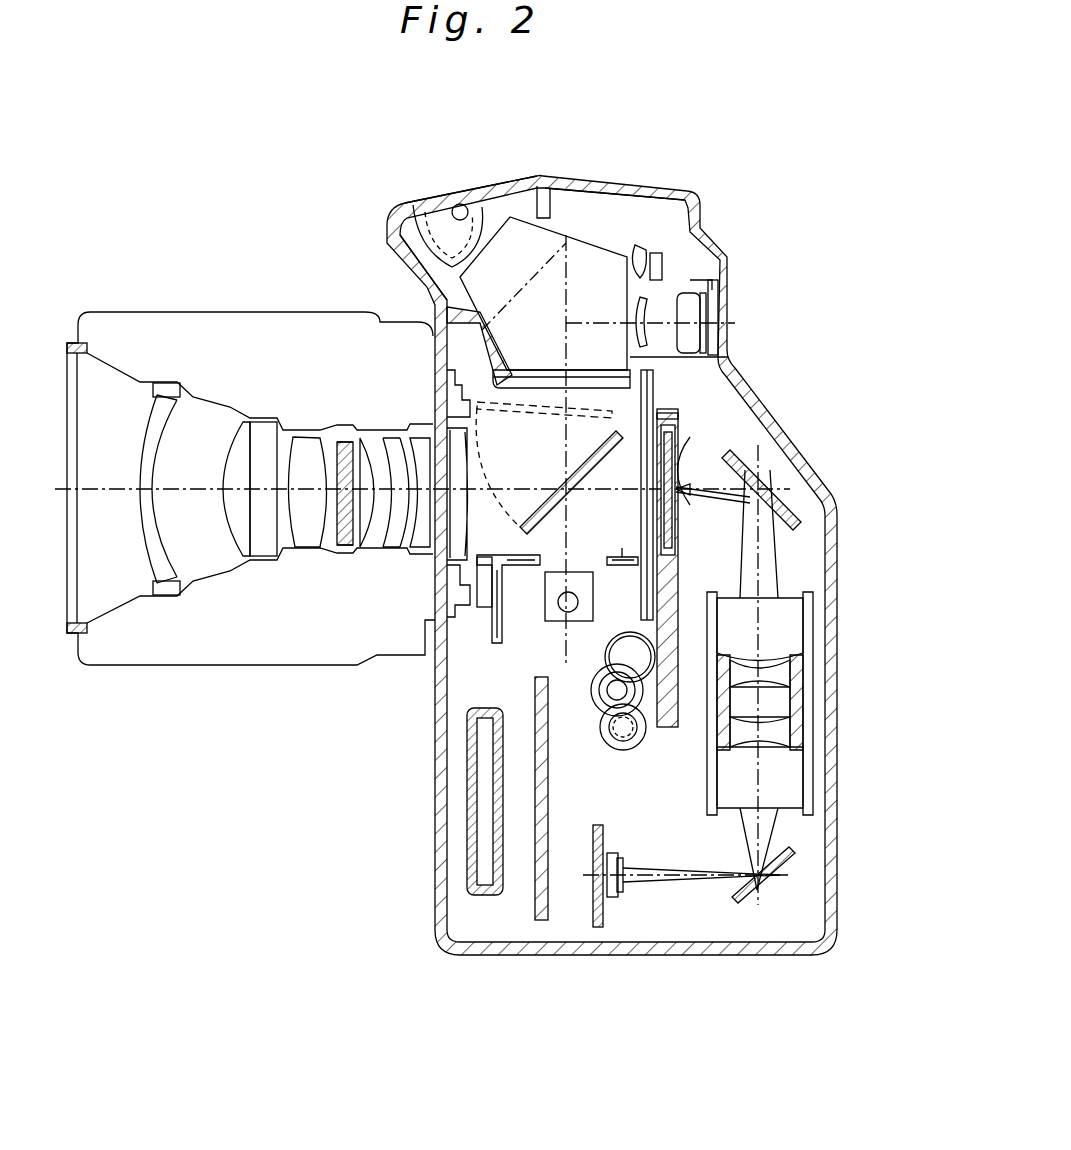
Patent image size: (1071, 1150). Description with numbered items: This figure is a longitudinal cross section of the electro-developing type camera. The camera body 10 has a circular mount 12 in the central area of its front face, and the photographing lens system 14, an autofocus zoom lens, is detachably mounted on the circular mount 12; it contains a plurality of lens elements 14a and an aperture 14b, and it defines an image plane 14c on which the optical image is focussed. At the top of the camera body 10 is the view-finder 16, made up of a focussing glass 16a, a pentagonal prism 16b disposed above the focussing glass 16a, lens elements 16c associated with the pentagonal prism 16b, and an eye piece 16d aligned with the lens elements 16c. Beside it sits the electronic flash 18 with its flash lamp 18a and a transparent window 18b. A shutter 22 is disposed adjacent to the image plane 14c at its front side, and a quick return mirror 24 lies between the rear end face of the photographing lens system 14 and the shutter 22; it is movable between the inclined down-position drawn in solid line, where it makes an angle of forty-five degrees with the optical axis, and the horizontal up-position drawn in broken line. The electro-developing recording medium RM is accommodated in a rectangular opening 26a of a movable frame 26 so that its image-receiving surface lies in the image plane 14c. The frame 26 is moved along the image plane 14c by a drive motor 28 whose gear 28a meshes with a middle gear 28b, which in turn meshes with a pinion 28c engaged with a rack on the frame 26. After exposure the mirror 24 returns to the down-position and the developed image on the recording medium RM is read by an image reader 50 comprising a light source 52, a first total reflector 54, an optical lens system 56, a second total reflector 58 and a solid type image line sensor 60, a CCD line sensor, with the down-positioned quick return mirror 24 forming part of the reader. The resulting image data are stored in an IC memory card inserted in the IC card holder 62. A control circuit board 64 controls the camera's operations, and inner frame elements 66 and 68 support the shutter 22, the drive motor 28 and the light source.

The camera body 10 is at (790, 960).
The circular mount 12 is at (428, 625).
The photographing lens system 14 is at (203, 312).
The lens elements 14a is at (428, 560).
The aperture 14b is at (350, 437).
The image plane 14c is at (673, 413).
The view-finder 16 is at (568, 232).
The focussing glass 16a is at (540, 378).
The pentagonal prism 16b is at (597, 265).
The lens elements 16c is at (663, 350).
The eye piece 16d is at (712, 302).
The electronic flash 18 is at (397, 208).
The flash lamp 18a is at (445, 215).
The transparent window 18b is at (395, 242).
The shutter 22 is at (650, 392).
The quick return mirror 24 is at (517, 420).
The movable frame 26 is at (670, 728).
The rectangular opening 26a is at (679, 545).
The drive motor 28 is at (609, 760).
The gear 28a is at (630, 748).
The middle gear 28b is at (608, 712).
The pinion 28c is at (607, 656).
The image reader 50 is at (800, 572).
The light source 52 is at (545, 612).
The first total reflector 54 is at (792, 498).
The optical lens system 56 is at (815, 725).
The second total reflector 58 is at (790, 858).
The solid type image line sensor 60 is at (605, 927).
The IC card holder 62 is at (480, 892).
The control circuit board 64 is at (540, 918).
The inner frame element 66 is at (618, 557).
The inner frame element 68 is at (530, 556).
The electro-developing recording medium RM is at (690, 440).